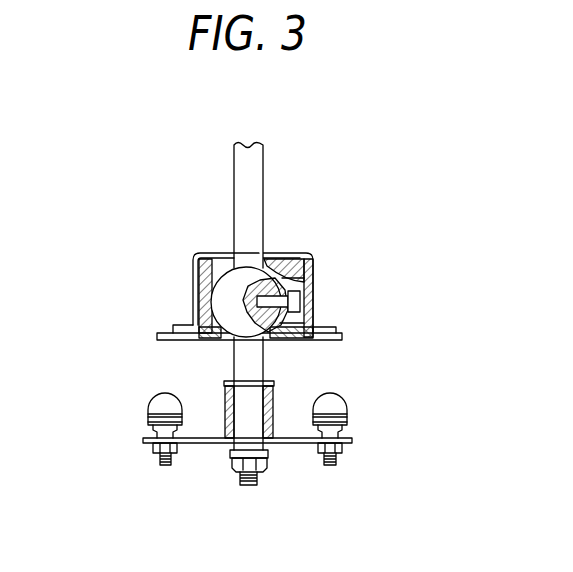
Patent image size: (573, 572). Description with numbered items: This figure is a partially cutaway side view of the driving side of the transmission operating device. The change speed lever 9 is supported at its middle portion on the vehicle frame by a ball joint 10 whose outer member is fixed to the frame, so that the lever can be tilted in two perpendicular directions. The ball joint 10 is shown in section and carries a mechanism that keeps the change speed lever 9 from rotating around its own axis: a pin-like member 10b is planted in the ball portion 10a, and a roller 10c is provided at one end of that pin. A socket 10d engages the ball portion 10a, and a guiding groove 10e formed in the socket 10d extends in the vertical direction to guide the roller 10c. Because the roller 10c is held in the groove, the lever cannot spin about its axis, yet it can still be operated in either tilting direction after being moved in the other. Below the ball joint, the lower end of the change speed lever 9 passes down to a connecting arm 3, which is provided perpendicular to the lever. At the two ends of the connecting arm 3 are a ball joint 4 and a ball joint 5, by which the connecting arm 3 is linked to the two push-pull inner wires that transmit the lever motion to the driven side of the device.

The connecting arm 3 is at (203, 442).
The ball joint 4 is at (158, 405).
The ball joint 5 is at (337, 407).
The change speed lever 9 is at (253, 163).
The ball joint 10 is at (270, 245).
The ball portion 10a is at (300, 263).
The pin-like member 10b is at (312, 310).
The roller 10c is at (305, 293).
The socket 10d is at (303, 275).
The guiding groove 10e is at (297, 325).